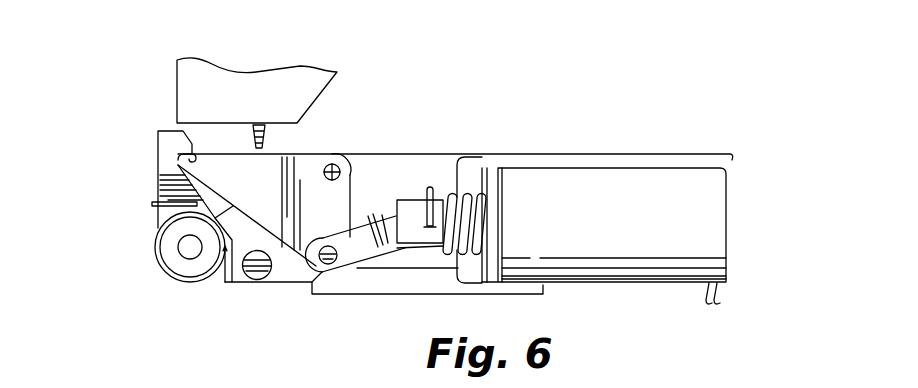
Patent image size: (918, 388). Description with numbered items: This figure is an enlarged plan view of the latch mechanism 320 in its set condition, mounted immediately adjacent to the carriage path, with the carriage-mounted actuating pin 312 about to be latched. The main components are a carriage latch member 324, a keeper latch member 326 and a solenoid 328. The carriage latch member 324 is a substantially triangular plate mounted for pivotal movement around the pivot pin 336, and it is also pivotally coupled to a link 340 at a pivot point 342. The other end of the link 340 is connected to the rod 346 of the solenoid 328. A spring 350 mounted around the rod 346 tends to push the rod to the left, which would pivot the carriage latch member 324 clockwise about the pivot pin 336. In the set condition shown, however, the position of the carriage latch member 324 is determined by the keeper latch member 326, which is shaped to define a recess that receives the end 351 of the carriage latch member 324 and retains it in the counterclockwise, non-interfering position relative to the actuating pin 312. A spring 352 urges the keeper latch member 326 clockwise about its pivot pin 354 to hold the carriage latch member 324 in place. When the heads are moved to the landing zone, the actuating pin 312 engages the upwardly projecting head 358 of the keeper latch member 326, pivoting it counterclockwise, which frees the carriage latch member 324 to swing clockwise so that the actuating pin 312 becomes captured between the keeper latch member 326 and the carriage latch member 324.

The actuating pin 312 is at (261, 124).
The latch mechanism 320 is at (508, 53).
The carriage latch member 324 is at (297, 155).
The keeper latch member 326 is at (170, 177).
The solenoid 328 is at (579, 179).
The pivot pin 336 is at (342, 167).
The link 340 is at (357, 252).
The pivot point 342 is at (318, 270).
The rod 346 is at (432, 188).
The spring 350 is at (503, 135).
The end of the carriage latch member 351 is at (180, 158).
The spring 352 is at (152, 204).
The pivot pin 354 is at (188, 248).
The head 358 is at (164, 128).